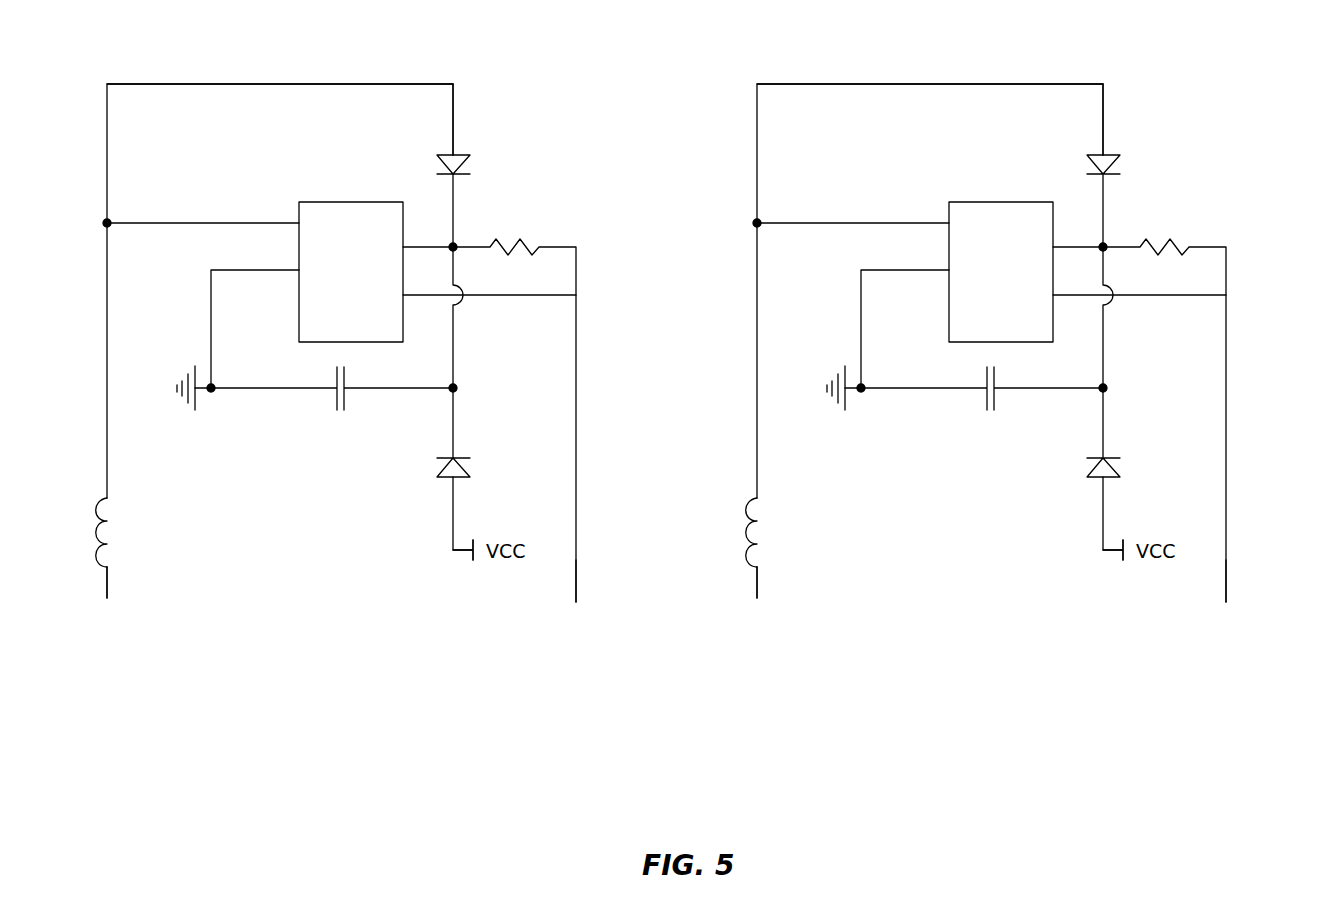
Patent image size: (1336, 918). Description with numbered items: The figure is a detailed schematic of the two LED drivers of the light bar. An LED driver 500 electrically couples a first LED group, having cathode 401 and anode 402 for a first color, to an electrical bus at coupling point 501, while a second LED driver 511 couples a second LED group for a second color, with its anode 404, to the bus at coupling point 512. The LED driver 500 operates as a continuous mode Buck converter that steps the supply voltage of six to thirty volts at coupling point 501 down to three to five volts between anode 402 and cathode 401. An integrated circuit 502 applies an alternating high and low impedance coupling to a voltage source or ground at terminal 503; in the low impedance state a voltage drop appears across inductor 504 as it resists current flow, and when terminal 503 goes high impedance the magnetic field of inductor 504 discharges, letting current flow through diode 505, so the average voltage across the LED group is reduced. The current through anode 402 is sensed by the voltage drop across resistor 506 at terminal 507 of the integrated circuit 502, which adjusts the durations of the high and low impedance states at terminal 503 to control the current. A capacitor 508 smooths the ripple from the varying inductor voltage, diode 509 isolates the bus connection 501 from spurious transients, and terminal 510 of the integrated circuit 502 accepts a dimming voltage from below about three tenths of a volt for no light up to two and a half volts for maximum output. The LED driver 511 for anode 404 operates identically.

The LED driver 500 is at (497, 113).
The LED driver 511 is at (1005, 99).
The coupling point 501 is at (468, 558).
The coupling point 512 is at (1089, 585).
The integrated circuit 502 is at (355, 202).
The terminal 503 is at (298, 222).
The inductor 504 is at (100, 510).
The diode 505 is at (466, 163).
The resistor 506 is at (518, 238).
The terminal 507 is at (403, 296).
The capacitor 508 is at (336, 395).
The diode 509 is at (470, 470).
The terminal 510 is at (299, 321).
The cathode 401 is at (108, 578).
The anode 402 is at (577, 575).
The anode 404 is at (1258, 600).